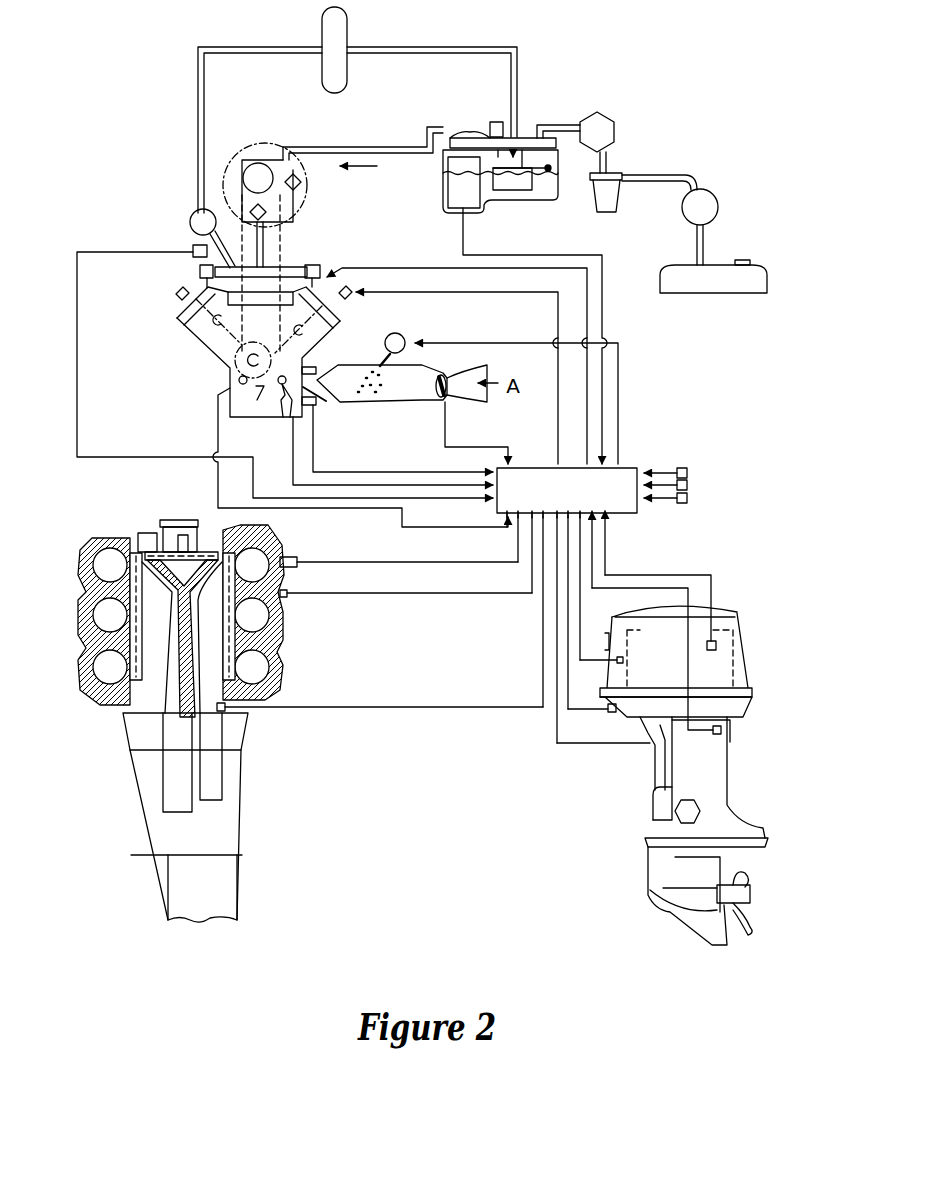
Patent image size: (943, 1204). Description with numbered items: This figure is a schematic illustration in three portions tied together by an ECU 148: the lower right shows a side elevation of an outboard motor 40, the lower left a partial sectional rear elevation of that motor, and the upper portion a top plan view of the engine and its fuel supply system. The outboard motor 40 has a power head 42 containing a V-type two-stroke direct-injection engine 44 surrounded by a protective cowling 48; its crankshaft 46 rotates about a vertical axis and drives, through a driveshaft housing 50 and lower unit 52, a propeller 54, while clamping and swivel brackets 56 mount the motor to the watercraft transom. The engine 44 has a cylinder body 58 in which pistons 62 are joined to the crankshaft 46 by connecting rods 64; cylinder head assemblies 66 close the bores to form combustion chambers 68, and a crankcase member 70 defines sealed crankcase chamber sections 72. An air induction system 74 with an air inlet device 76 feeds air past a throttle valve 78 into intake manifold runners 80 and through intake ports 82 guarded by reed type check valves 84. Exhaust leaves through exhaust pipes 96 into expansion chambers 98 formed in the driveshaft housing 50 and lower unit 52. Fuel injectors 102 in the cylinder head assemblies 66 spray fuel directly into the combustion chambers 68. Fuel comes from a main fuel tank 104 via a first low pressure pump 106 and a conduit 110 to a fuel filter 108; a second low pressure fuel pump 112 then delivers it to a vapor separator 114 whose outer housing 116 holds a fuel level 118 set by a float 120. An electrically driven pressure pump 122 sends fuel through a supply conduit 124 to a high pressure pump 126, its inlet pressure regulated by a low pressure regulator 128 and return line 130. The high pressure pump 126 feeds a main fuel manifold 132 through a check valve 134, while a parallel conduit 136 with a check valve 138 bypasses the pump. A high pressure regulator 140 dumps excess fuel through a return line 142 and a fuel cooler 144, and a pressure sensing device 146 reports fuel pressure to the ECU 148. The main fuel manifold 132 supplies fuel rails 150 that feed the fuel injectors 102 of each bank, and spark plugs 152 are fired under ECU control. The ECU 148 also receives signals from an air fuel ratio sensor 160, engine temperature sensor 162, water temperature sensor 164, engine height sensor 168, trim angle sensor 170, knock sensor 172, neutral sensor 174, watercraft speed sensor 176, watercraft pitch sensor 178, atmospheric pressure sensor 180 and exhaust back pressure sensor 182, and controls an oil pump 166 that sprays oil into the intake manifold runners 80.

The outboard motor 40 is at (730, 607).
The power head 42 is at (775, 655).
The internal combustion engine 44 is at (275, 548).
The crankshaft 46 is at (262, 397).
The protective cowling 48 is at (750, 675).
The driveshaft housing 50 is at (245, 823).
The lower unit 52 is at (240, 902).
The propeller 54 is at (753, 923).
The clamping and swivel brackets 56 is at (640, 743).
The cylinder body 58 is at (195, 337).
The pistons 62 is at (203, 325).
The connecting rods 64 is at (212, 363).
The cylinder head assemblies 66 is at (178, 307).
The combustion chambers 68 is at (232, 413).
The crankcase member 70 is at (231, 387).
The crankcase chamber sections 72 is at (277, 403).
The air induction system 74 is at (430, 358).
The air inlet device 76 is at (407, 403).
The throttle valve 78 is at (445, 375).
The intake manifold runners 80 is at (397, 385).
The intake ports 82 is at (313, 407).
The reed type check valves 84 is at (323, 399).
The exhaust pipes 96 is at (250, 742).
The expansion chambers 98 is at (223, 785).
The fuel injectors 102 is at (272, 275).
The main fuel tank 104 is at (733, 297).
The first low pressure pump 106 is at (720, 206).
The fuel filter 108 is at (620, 205).
The conduit 110 is at (663, 174).
The second low pressure fuel pump 112 is at (614, 126).
The vapor separator 114 is at (548, 208).
The outer housing 116 is at (495, 205).
The fuel level 118 is at (549, 163).
The float 120 is at (522, 160).
The electrically driven pressure pump 122 is at (448, 188).
The supply conduit 124 is at (370, 147).
The high pressure pump 126 is at (258, 163).
The low pressure regulator 128 is at (493, 122).
The return line 130 is at (470, 127).
The main fuel manifold 132 is at (250, 262).
The check valve 134 is at (293, 224).
The parallel conduit 136 is at (297, 203).
The check valve 138 is at (303, 192).
The high pressure regulator 140 is at (193, 214).
The return line 142 is at (437, 47).
The fuel heat exchanger 144 is at (348, 30).
The pressure sensing device 146 is at (193, 249).
The ECU 148 is at (538, 468).
The fuel rails 150 is at (200, 268).
The spark plugs 152 is at (186, 289).
The air fuel ratio sensor 160 is at (300, 560).
The engine temperature sensor 162 is at (287, 592).
The water temperature sensor 164 is at (712, 650).
The oil pump 166 is at (402, 333).
The engine height sensor 168 is at (611, 712).
The trim angle sensor 170 is at (655, 753).
The knock sensor 172 is at (624, 660).
The neutral sensor 174 is at (715, 742).
The watercraft speed sensor 176 is at (682, 468).
The watercraft pitch sensor 178 is at (687, 485).
The atmospheric pressure sensor 180 is at (683, 508).
The exhaust back pressure sensor 182 is at (225, 708).